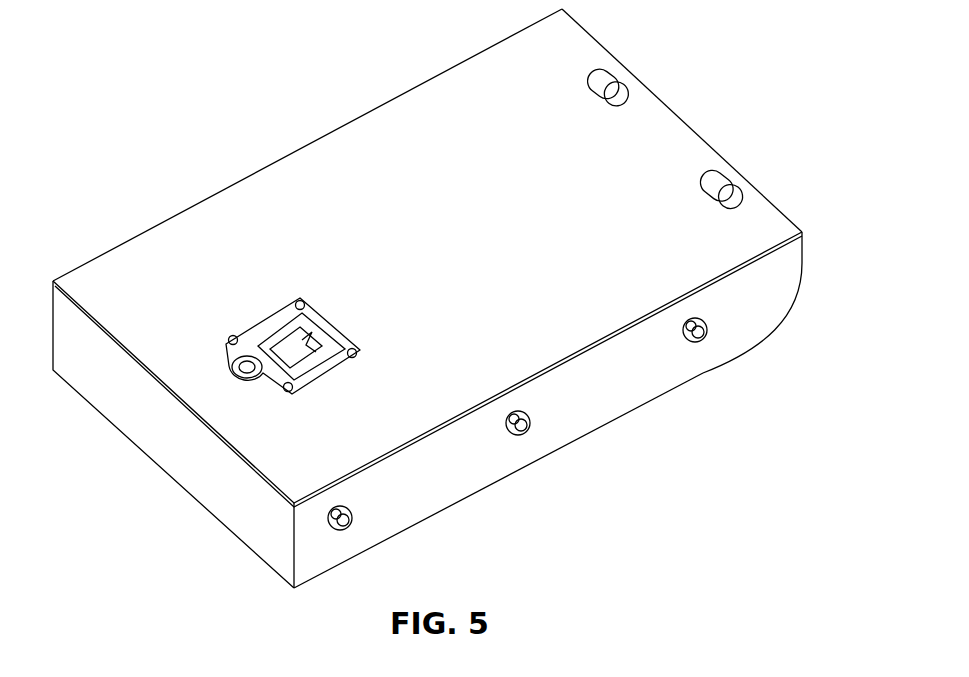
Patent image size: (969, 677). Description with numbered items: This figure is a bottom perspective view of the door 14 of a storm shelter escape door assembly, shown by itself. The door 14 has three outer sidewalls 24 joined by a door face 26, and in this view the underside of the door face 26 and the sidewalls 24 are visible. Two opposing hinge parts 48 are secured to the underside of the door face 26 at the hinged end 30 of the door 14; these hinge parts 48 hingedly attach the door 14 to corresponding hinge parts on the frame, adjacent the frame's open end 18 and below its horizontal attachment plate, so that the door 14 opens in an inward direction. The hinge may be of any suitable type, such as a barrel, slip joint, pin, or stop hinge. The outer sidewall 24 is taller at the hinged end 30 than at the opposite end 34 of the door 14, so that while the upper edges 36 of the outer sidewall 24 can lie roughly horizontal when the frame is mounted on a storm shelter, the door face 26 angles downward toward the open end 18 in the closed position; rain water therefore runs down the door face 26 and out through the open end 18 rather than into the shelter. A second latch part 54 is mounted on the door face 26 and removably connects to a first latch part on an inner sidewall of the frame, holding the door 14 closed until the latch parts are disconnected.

The door 14 is at (692, 76).
The open end 18 is at (700, 136).
The outer sidewall 24 is at (247, 530).
The door face 26 is at (460, 110).
The hinged end 30 is at (805, 263).
The opposite end 34 is at (293, 557).
The upper edges 36 is at (558, 452).
The opposing hinge part 48 is at (608, 68).
The second latch part 54 is at (235, 348).